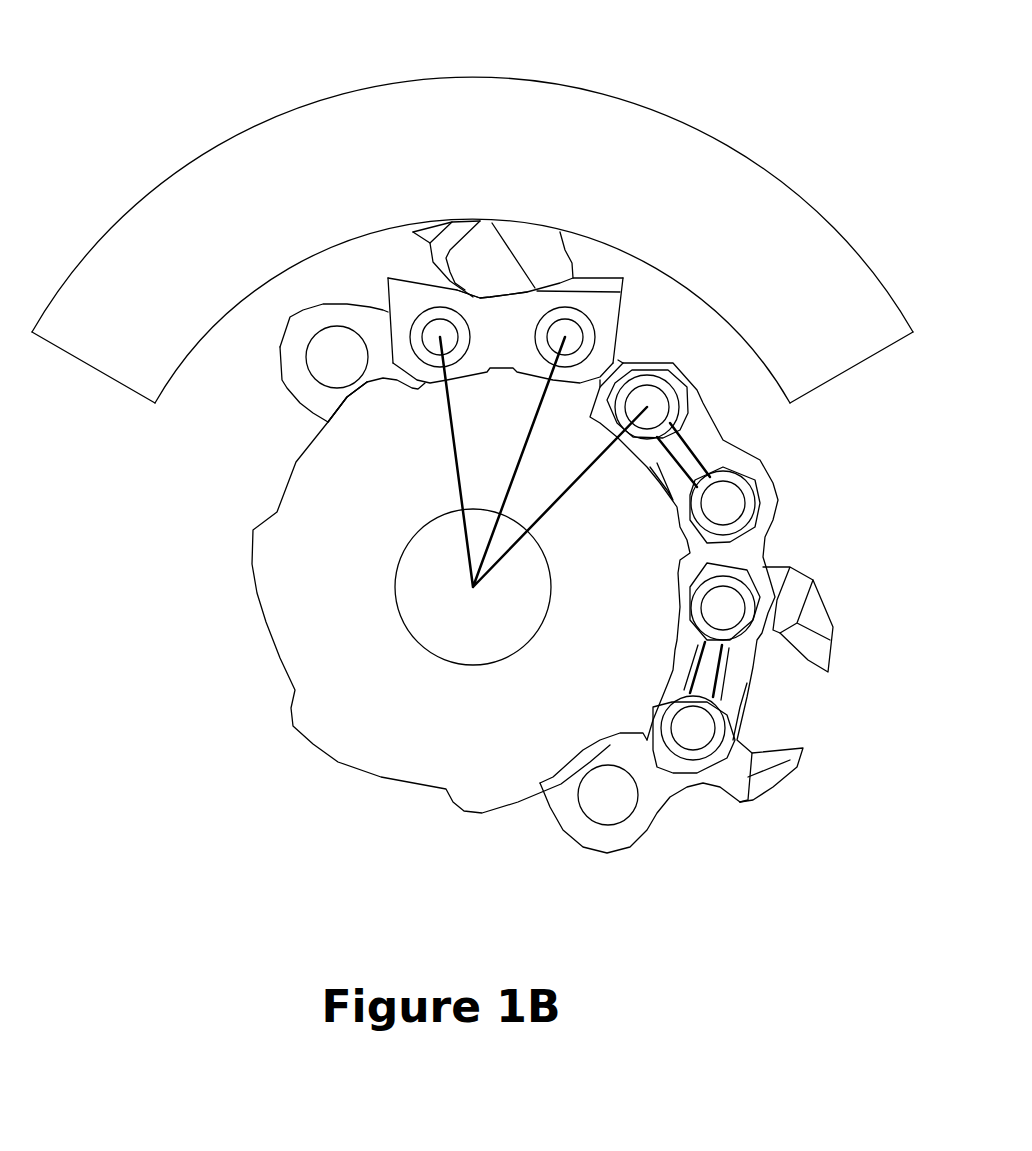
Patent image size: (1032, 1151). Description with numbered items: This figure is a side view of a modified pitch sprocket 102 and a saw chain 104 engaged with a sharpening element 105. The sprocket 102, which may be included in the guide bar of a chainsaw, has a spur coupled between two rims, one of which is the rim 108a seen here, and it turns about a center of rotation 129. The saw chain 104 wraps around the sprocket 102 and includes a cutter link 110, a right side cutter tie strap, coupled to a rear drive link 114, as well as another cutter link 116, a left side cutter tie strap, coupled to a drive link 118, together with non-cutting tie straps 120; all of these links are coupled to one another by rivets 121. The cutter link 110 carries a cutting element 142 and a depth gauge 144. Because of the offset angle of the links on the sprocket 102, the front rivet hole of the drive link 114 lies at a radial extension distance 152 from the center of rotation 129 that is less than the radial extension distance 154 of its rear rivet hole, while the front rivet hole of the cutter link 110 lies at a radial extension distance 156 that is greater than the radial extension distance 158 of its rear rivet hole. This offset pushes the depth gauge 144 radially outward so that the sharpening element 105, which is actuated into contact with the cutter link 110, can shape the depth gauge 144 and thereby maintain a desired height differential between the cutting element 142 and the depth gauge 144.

The sprocket 102 is at (156, 526).
The saw chain 104 is at (805, 518).
The sharpening element 105 is at (747, 244).
The rim 108a is at (378, 752).
The cutter link 110 is at (407, 300).
The rear drive link 114 is at (303, 390).
The cutter link 116 is at (757, 785).
The drive link 118 is at (648, 803).
The non-cutting tie straps 120 is at (730, 660).
The rivets 121 is at (727, 490).
The center of rotation 129 is at (471, 593).
The cutting element 142 is at (443, 234).
The depth gauge 144 is at (573, 241).
The radial extension distance 152 is at (607, 455).
The radial extension distance 154 is at (560, 400).
The radial extension distance 156 is at (529, 430).
The radial extension distance 158 is at (447, 447).